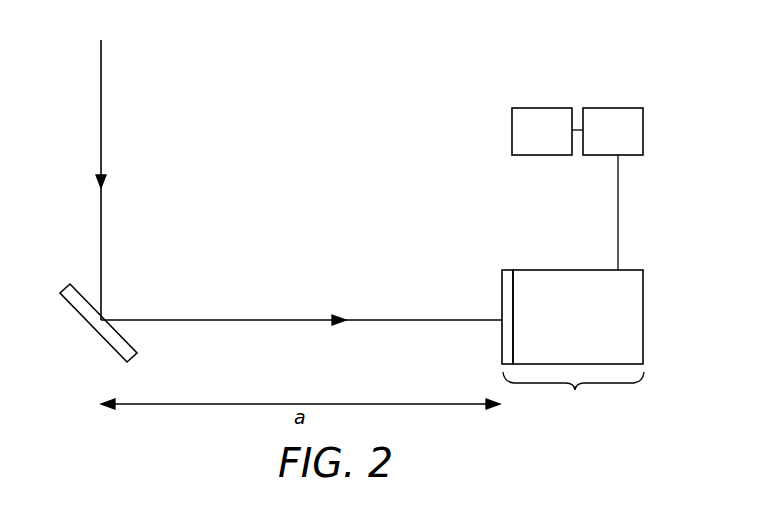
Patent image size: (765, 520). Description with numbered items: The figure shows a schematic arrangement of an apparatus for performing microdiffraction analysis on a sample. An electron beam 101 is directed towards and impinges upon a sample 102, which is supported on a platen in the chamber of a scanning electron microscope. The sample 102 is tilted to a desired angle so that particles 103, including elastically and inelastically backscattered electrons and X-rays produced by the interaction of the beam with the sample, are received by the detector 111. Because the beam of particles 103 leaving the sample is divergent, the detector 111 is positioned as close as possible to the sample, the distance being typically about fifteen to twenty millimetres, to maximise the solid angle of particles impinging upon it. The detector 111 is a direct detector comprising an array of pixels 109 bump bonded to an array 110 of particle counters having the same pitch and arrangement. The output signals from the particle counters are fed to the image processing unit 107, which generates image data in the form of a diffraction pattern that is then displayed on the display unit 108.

The electron beam 101 is at (101, 111).
The sample 102 is at (113, 350).
The particles 103 is at (291, 318).
The image processing unit 107 is at (615, 107).
The display unit 108 is at (543, 107).
The array of pixels 109 is at (508, 269).
The array of particle counters 110 is at (580, 269).
The detector 111 is at (573, 394).